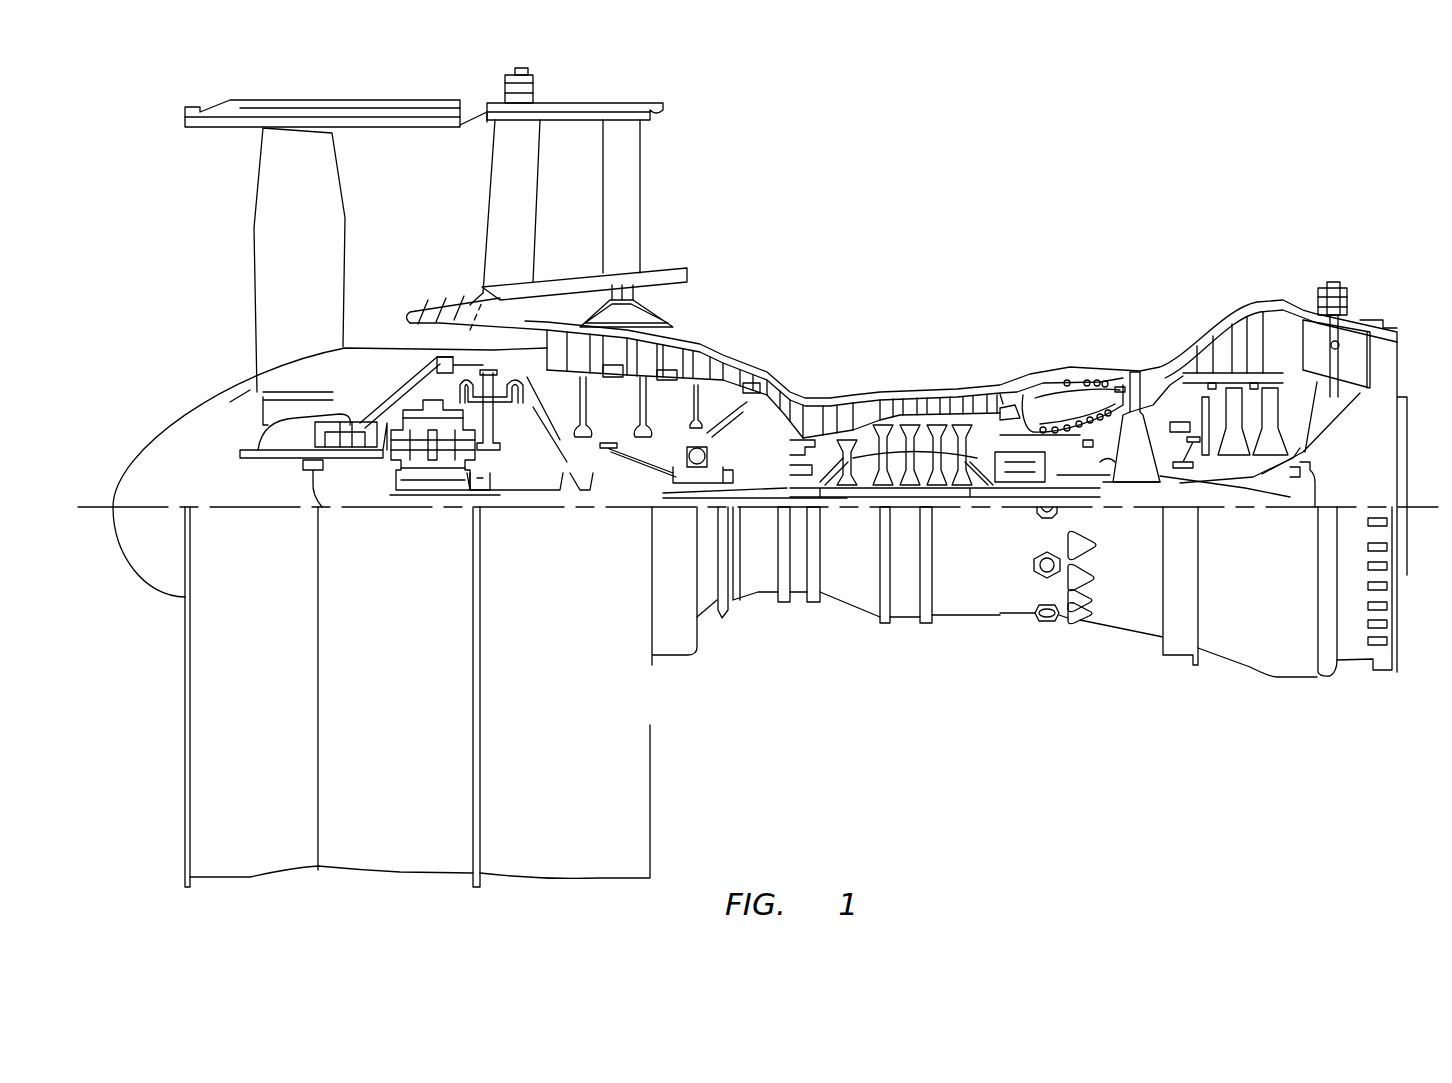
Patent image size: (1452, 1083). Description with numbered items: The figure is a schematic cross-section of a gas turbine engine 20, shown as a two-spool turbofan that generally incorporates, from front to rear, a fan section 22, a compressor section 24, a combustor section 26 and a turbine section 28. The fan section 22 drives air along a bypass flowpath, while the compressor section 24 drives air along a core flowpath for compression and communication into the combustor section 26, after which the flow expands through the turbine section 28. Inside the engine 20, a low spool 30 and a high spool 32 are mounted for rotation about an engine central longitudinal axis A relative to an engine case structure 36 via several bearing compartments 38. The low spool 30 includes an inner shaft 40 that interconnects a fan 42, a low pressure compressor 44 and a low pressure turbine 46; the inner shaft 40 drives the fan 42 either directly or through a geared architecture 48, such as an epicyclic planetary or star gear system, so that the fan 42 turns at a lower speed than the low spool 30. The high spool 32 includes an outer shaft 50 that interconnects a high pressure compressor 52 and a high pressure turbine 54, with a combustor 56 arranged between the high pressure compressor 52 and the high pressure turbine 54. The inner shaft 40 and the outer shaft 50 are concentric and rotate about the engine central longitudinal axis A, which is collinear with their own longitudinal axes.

The gas turbine engine 20 is at (1128, 157).
The fan section 22 is at (478, 93).
The compressor section 24 is at (487, 245).
The combustor section 26 is at (1000, 245).
The turbine section 28 is at (1337, 245).
The low spool 30 is at (748, 455).
The high spool 32 is at (988, 475).
The engine case structure 36 is at (906, 626).
The bearing compartments 38 is at (513, 580).
The inner shaft 40 is at (1103, 490).
The fan 42 is at (237, 265).
The low pressure compressor 44 is at (672, 350).
The low pressure turbine 46 is at (1250, 334).
The geared architecture 48 is at (433, 455).
The outer shaft 50 is at (1105, 475).
The high pressure compressor 52 is at (830, 425).
The high pressure turbine 54 is at (1137, 395).
The combustor 56 is at (1074, 402).
The engine central longitudinal axis A is at (1427, 505).